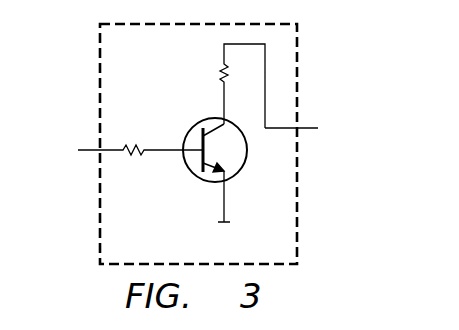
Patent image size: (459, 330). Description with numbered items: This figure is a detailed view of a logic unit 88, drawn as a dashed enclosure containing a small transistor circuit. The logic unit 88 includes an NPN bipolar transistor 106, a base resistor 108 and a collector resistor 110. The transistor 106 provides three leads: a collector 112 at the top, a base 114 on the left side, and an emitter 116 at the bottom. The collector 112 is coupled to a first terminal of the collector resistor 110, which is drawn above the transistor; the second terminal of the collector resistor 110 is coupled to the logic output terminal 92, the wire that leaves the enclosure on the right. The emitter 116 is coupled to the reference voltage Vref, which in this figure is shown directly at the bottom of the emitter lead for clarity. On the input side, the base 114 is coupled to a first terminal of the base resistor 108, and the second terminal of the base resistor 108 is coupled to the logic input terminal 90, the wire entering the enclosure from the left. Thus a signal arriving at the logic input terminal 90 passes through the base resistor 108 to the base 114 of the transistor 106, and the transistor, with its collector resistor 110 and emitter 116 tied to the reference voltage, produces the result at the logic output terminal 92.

The logic unit 88 is at (300, 65).
The logic input terminal 90 is at (85, 152).
The logic output terminal 92 is at (308, 131).
The NPN bipolar transistor 106 is at (215, 183).
The base resistor 108 is at (128, 147).
The collector resistor 110 is at (219, 74).
The collector 112 is at (222, 107).
The base 114 is at (178, 152).
The emitter 116 is at (226, 190).